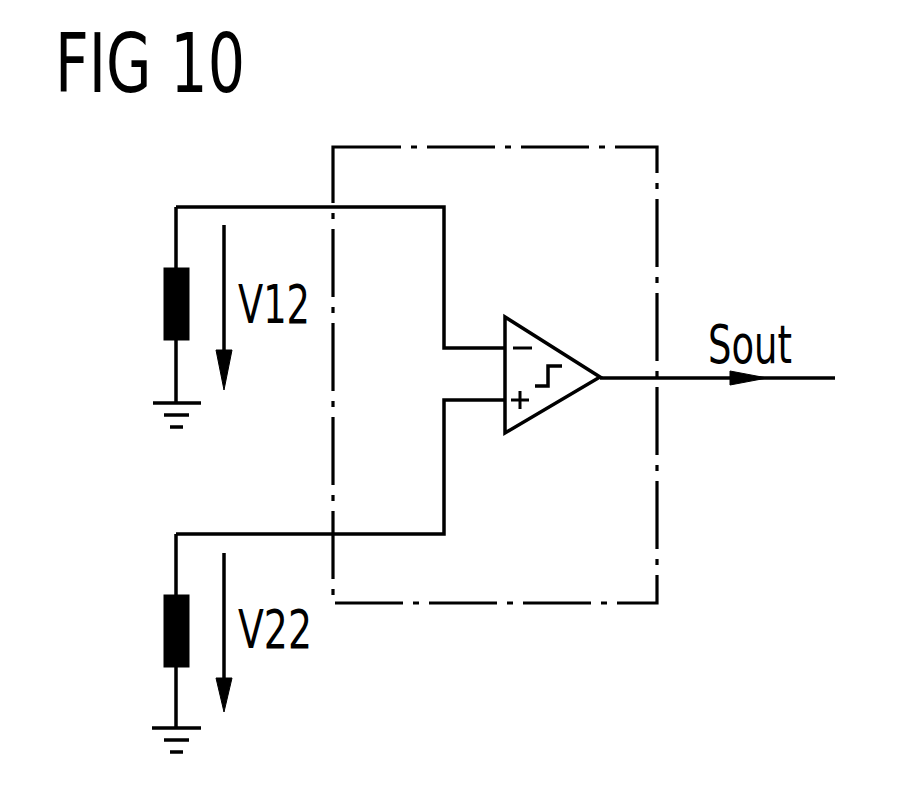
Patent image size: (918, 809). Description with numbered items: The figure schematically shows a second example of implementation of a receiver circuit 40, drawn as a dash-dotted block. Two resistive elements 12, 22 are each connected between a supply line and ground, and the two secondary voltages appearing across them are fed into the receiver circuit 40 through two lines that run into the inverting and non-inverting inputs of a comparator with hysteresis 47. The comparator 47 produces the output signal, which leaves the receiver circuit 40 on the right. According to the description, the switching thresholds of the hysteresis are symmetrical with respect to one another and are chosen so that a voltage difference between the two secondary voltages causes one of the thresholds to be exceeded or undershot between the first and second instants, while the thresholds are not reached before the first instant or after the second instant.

The first resistor (sensor element) 12 is at (163, 305).
The second resistor (sensor element) 22 is at (163, 633).
The receiver circuit 40 is at (453, 603).
The comparator with hysteresis 47 is at (553, 347).